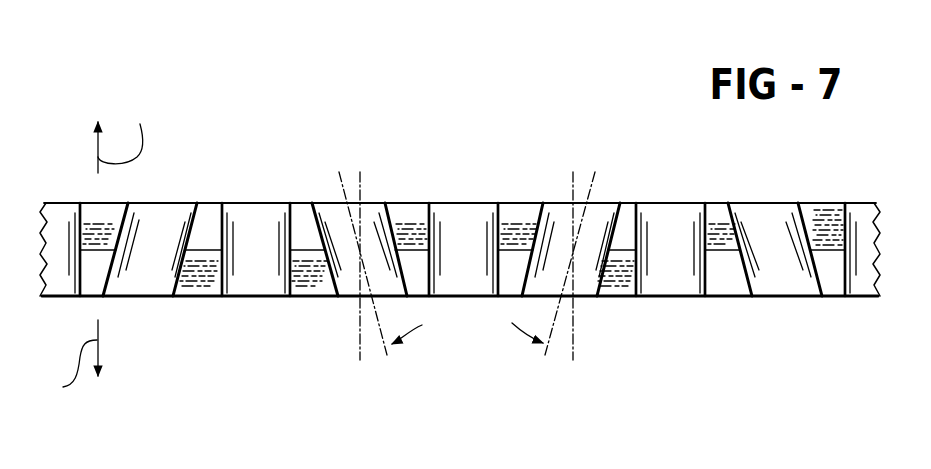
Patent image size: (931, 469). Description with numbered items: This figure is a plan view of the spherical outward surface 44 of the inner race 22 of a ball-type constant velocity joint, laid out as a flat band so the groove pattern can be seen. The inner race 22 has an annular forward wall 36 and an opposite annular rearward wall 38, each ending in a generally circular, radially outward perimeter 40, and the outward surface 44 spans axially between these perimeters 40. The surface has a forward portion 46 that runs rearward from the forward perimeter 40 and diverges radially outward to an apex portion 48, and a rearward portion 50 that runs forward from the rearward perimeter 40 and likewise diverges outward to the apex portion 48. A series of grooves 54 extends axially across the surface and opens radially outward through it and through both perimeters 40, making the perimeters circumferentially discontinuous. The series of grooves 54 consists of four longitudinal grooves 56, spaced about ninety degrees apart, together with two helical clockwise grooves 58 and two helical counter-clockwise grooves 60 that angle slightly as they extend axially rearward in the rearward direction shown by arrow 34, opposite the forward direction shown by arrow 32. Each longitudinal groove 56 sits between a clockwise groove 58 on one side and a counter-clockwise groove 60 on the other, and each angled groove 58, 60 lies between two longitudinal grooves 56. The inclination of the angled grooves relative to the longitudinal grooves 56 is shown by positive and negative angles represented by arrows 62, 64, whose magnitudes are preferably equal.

The inner race 22 is at (630, 88).
The arrow indicating forward direction 32 is at (68, 360).
The arrow indicating rearward direction 34 is at (124, 138).
The annular forward wall 36 is at (308, 294).
The annular rearward wall 38 is at (304, 206).
The radially outward perimeter 40 is at (206, 205).
The outward surface 44 is at (522, 200).
The forward portion 46 is at (727, 280).
The apex portion 48 is at (827, 248).
The rearward portion 50 is at (718, 212).
The series of grooves 54 is at (160, 198).
The longitudinal grooves 56 is at (54, 210).
The helical clockwise grooves 58 is at (583, 207).
The helical counter-clockwise grooves 60 is at (350, 207).
The arrow representing positive angle 62 is at (580, 348).
The arrow representing negative angle 64 is at (352, 346).